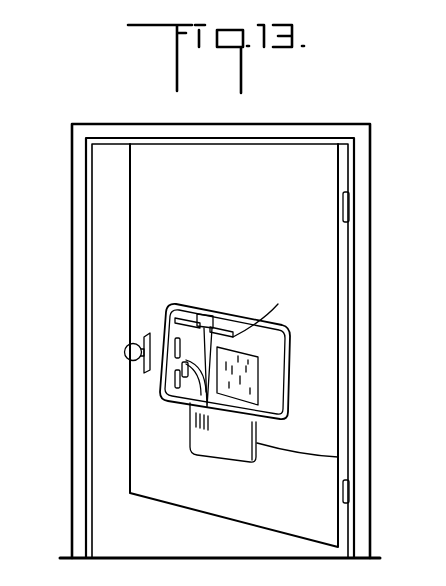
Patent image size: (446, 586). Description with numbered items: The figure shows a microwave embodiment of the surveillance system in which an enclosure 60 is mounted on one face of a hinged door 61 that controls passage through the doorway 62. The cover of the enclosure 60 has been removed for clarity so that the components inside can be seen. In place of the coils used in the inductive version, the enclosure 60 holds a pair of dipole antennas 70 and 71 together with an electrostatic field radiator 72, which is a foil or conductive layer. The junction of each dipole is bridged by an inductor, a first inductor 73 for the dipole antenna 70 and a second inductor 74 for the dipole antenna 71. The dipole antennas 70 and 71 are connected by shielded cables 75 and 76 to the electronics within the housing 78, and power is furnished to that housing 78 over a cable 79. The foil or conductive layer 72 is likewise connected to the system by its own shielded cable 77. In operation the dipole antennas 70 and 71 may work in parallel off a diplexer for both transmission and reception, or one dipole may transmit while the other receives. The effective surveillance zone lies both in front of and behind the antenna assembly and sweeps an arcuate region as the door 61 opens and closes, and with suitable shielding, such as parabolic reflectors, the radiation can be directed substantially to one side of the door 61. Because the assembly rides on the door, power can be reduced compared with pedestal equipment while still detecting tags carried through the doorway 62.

The enclosure 60 is at (291, 334).
The hinged door 61 is at (176, 504).
The doorway 62 is at (365, 252).
The dipole antenna 70 is at (183, 305).
The dipole antenna 71 is at (175, 397).
The electrostatic field radiator 72 is at (258, 376).
The inductor 73 is at (206, 316).
The inductor 74 is at (190, 362).
The shielded cable 75 is at (263, 312).
The shielded cable 76 is at (193, 393).
The shielded cable 77 is at (215, 410).
The housing 78 is at (224, 450).
The cable 79 is at (306, 455).